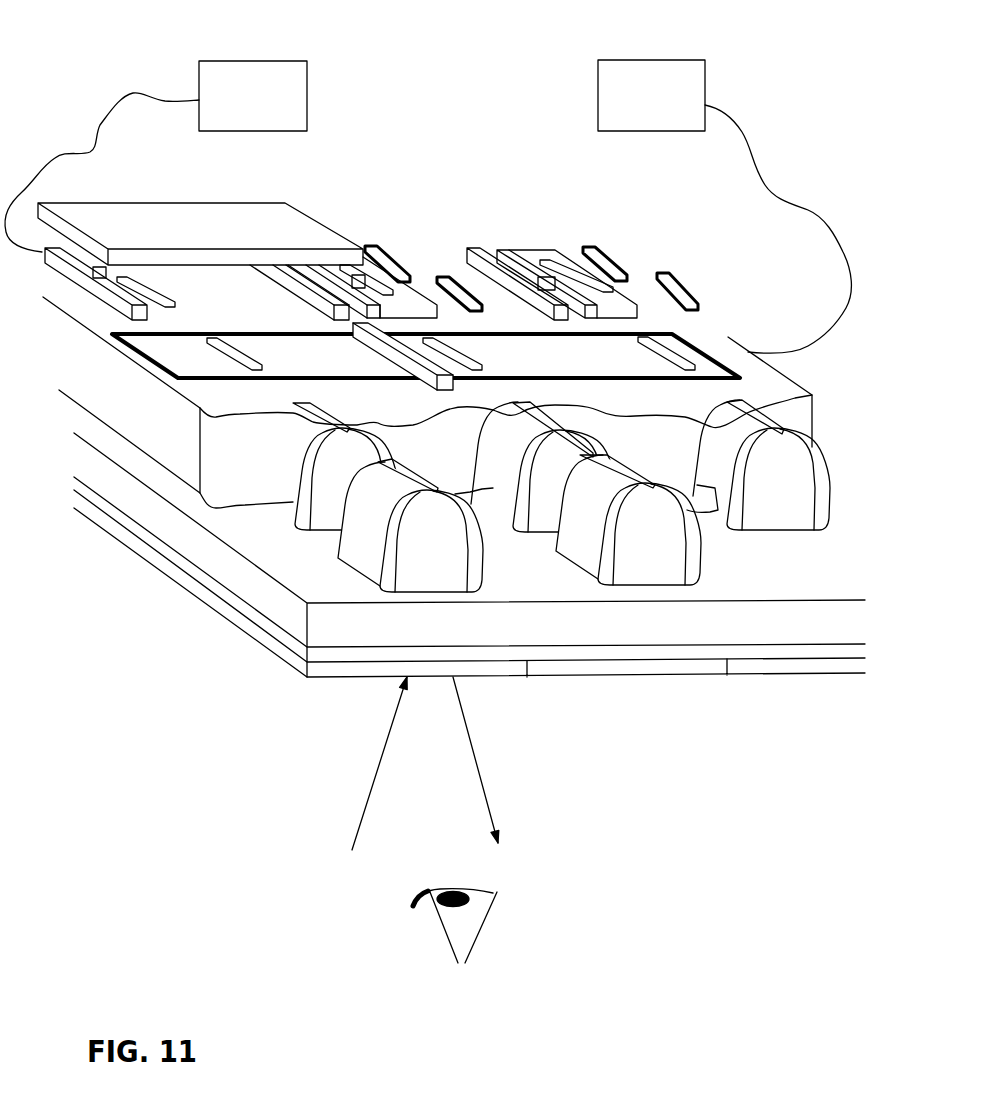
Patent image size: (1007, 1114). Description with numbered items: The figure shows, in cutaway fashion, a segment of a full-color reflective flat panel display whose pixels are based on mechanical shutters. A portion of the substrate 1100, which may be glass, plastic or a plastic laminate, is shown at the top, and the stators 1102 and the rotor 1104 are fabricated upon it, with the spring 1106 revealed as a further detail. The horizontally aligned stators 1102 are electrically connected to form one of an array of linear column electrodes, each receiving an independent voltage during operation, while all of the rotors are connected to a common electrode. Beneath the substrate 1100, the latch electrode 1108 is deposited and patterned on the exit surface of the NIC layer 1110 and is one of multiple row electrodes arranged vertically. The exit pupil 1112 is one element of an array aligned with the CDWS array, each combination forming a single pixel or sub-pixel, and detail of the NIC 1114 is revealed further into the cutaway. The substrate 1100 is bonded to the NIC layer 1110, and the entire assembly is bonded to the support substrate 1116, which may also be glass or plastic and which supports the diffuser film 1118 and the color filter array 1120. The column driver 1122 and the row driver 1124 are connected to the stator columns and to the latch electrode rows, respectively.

The substrate 1100 is at (243, 217).
The stators 1102 is at (354, 324).
The rotor 1104 is at (570, 270).
The spring 1106 is at (613, 252).
The latch electrode 1108 is at (683, 343).
The NIC layer 1110 is at (220, 472).
The exit pupil 1112 is at (753, 403).
The NIC 1114 is at (365, 533).
The support substrate 1116 is at (273, 622).
The diffuser film 1118 is at (278, 639).
The color filter array 1120 is at (293, 665).
The column driver 1122 is at (243, 58).
The row driver 1124 is at (650, 58).